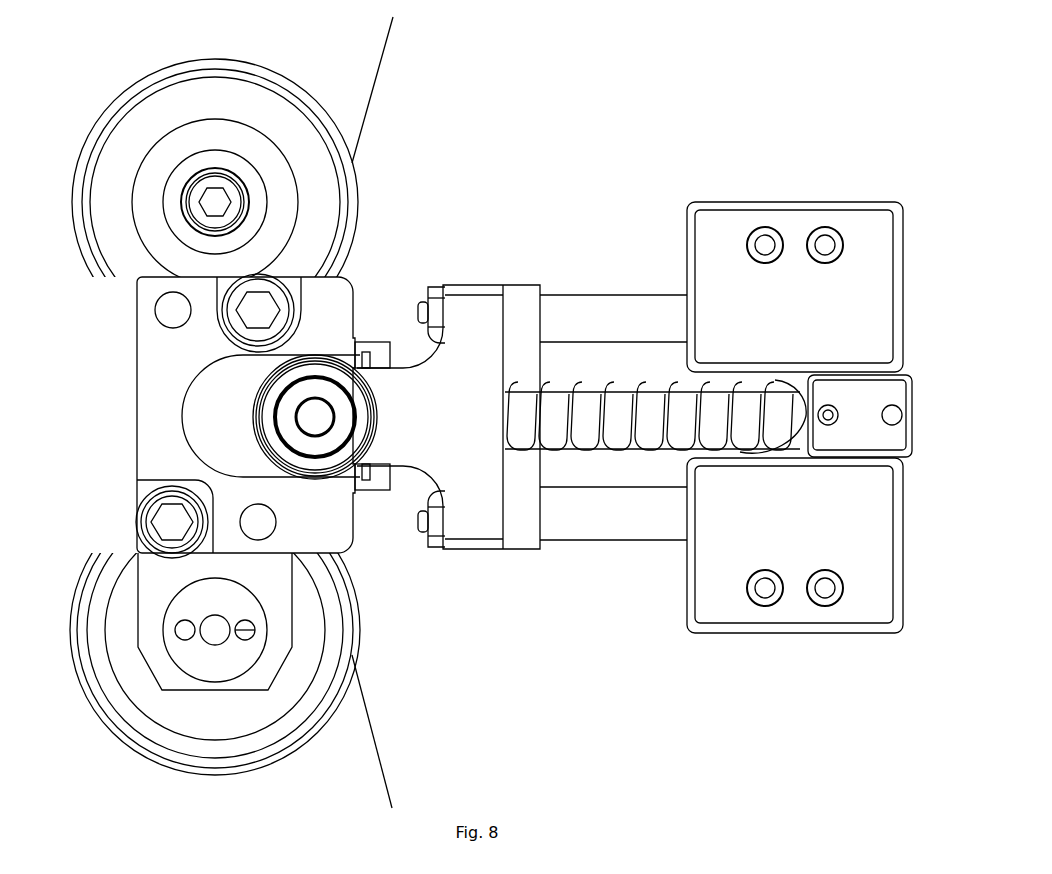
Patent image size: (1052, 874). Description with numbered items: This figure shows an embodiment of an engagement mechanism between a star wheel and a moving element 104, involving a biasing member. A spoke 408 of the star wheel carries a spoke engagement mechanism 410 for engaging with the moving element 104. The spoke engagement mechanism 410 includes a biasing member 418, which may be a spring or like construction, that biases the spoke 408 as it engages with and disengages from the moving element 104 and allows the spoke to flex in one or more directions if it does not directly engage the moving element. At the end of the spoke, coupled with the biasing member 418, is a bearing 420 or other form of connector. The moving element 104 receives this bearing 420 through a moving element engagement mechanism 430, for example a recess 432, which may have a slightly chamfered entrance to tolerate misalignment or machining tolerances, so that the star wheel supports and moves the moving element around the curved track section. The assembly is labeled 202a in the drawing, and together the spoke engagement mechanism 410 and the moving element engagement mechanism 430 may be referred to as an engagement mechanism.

The moving element 104 is at (260, 573).
The tensioner module 202a is at (452, 157).
The spoke 408 is at (798, 713).
The spoke engagement mechanism 410 is at (545, 634).
The biasing member 418 is at (808, 452).
The bearing 420 is at (352, 420).
The moving element engagement mechanism 430 is at (98, 450).
The recess 432 is at (188, 422).